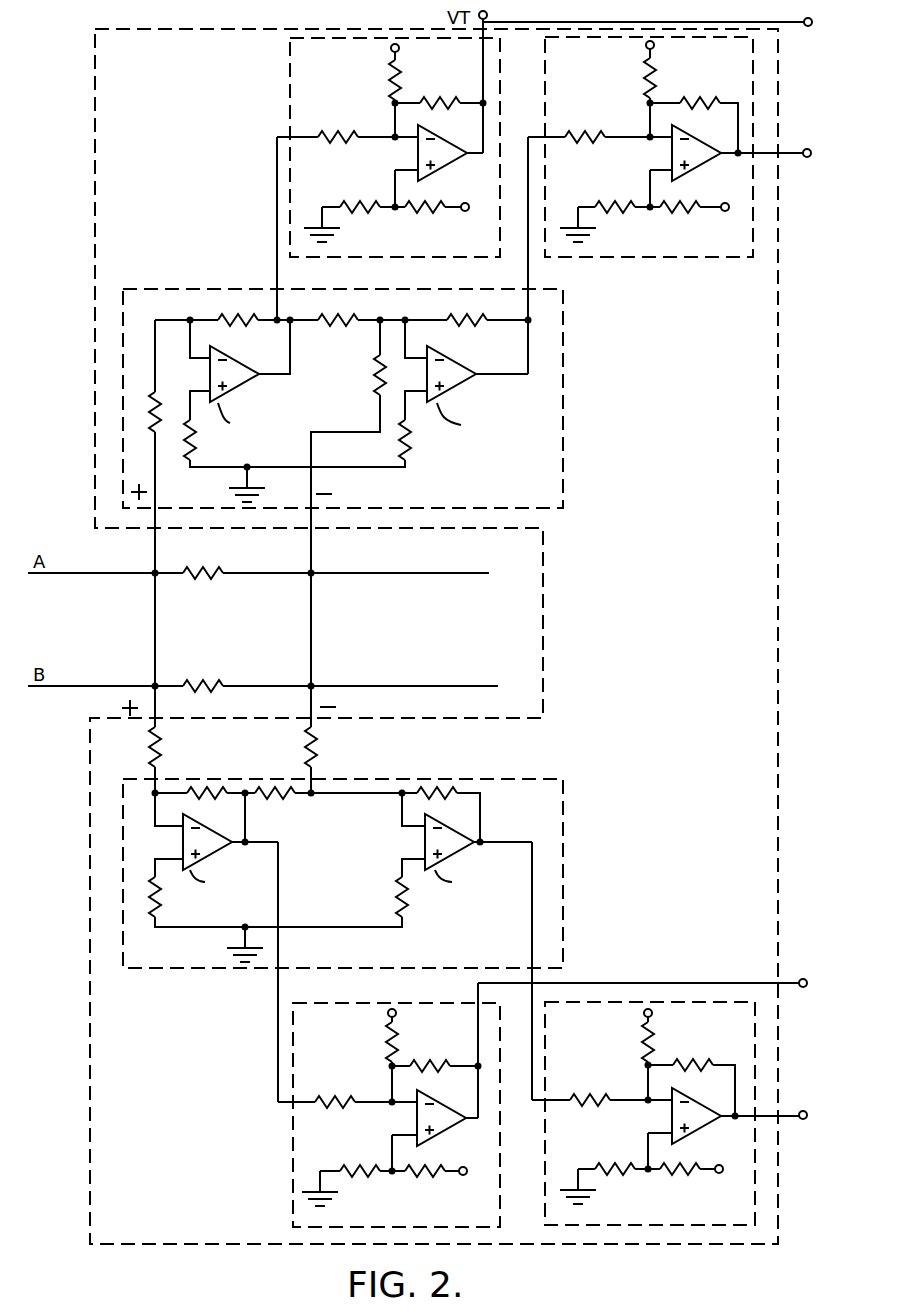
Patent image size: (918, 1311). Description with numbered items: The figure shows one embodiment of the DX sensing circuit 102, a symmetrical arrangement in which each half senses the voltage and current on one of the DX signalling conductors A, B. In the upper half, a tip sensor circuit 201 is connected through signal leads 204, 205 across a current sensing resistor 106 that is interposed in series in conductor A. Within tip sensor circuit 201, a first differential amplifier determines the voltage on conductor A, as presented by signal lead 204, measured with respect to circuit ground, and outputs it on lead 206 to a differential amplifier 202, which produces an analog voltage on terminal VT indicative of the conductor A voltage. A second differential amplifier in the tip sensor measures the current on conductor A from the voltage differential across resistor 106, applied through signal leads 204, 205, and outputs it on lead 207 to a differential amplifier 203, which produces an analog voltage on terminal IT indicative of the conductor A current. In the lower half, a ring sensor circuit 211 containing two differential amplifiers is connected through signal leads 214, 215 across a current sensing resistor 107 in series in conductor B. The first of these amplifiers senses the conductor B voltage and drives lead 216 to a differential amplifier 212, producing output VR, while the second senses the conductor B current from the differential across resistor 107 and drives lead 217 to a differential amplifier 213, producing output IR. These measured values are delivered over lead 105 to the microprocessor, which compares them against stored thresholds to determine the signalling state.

The DX sensing circuit 102 is at (778, 745).
The lead 105 is at (806, 147).
The current sensing resistor 106 is at (210, 578).
The current sensing resistor 107 is at (207, 684).
The tip sensor circuit 201 is at (563, 447).
The differential amplifier 202 is at (288, 112).
The differential amplifier 203 is at (720, 262).
The signal lead 204 is at (155, 553).
The signal lead 205 is at (311, 552).
The lead 206 is at (277, 262).
The lead 207 is at (530, 266).
The ring sensor circuit 211 is at (563, 790).
The differential amplifier 212 is at (293, 1190).
The differential amplifier 213 is at (672, 1000).
The signal lead 214 is at (155, 690).
The signal lead 215 is at (318, 690).
The lead 216 is at (278, 992).
The lead 217 is at (532, 936).